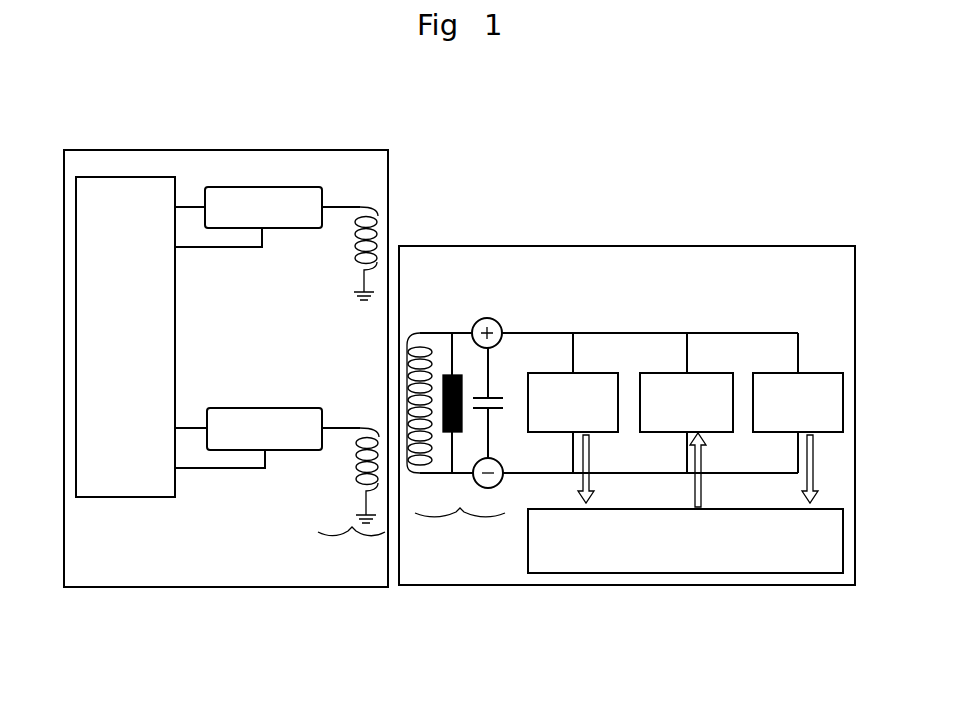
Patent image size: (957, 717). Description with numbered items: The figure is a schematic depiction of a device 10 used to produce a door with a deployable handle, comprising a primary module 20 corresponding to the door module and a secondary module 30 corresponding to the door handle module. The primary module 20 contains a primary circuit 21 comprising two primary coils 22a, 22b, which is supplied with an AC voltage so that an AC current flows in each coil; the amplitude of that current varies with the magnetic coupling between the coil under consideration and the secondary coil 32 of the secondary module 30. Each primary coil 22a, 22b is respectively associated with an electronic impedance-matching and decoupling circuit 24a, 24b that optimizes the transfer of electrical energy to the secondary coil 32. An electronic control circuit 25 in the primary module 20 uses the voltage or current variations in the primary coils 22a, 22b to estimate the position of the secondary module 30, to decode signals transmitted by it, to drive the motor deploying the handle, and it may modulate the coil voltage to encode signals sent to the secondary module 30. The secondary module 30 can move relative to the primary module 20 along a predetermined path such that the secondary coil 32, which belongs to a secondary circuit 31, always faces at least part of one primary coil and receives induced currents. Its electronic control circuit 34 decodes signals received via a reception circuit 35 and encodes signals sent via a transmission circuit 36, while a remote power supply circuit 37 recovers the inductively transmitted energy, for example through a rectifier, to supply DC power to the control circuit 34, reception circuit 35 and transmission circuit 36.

The device 10 is at (457, 207).
The primary module 20 is at (225, 150).
The primary circuit 21 is at (351, 545).
The primary coil 22a is at (358, 205).
The primary coil 22b is at (362, 427).
The impedance-matching and decoupling circuit 24a is at (267, 217).
The impedance-matching and decoupling circuit 24b is at (267, 438).
The electronic control circuit 25 is at (125, 337).
The secondary module 30 is at (627, 245).
The secondary circuit 31 is at (456, 414).
The secondary coil 32 is at (423, 328).
The electronic control circuit 34 is at (685, 541).
The reception circuit 35 is at (573, 418).
The transmission circuit 36 is at (686, 420).
The remote power supply circuit 37 is at (798, 418).